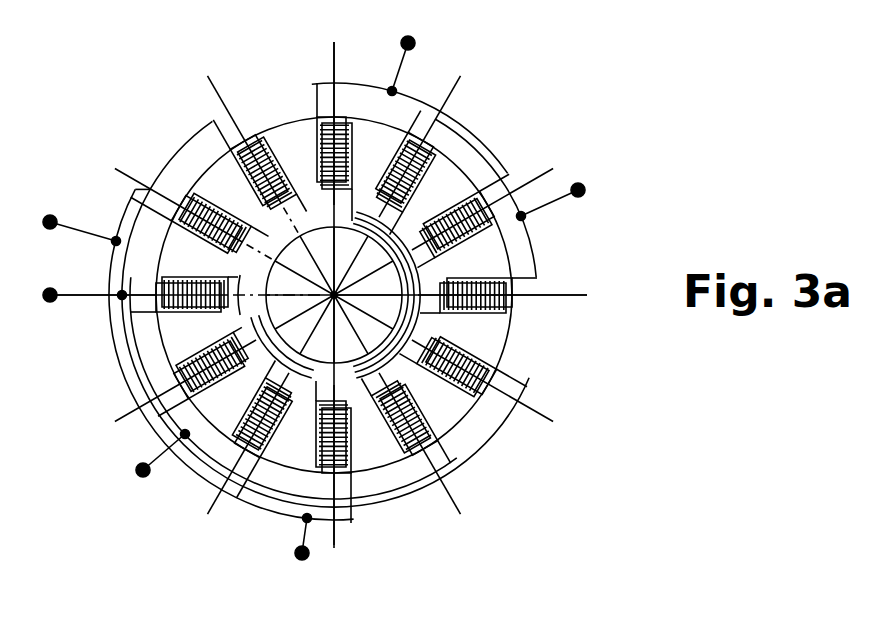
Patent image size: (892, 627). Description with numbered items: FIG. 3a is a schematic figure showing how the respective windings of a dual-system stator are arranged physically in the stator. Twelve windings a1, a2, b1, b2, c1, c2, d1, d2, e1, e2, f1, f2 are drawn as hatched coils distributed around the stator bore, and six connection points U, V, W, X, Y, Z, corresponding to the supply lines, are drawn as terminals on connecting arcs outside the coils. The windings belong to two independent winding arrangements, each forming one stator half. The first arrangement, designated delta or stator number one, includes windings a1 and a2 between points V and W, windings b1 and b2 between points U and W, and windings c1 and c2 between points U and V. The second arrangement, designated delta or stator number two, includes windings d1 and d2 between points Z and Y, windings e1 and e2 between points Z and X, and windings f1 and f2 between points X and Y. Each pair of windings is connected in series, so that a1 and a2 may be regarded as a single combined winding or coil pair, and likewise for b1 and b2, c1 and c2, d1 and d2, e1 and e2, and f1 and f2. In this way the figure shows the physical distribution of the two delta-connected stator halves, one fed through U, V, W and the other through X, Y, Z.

The winding a1 is at (185, 278).
The winding a2 is at (502, 313).
The winding b1 is at (255, 154).
The winding b2 is at (417, 442).
The winding c1 is at (417, 150).
The winding c2 is at (249, 441).
The winding d1 is at (185, 375).
The winding d2 is at (481, 212).
The winding e1 is at (193, 213).
The winding e2 is at (480, 380).
The winding f1 is at (350, 131).
The winding f2 is at (320, 464).
The connection point U is at (88, 296).
The connection point V is at (562, 196).
The connection point W is at (148, 470).
The connection point X is at (69, 226).
The connection point Y is at (403, 50).
The connection point Z is at (302, 557).